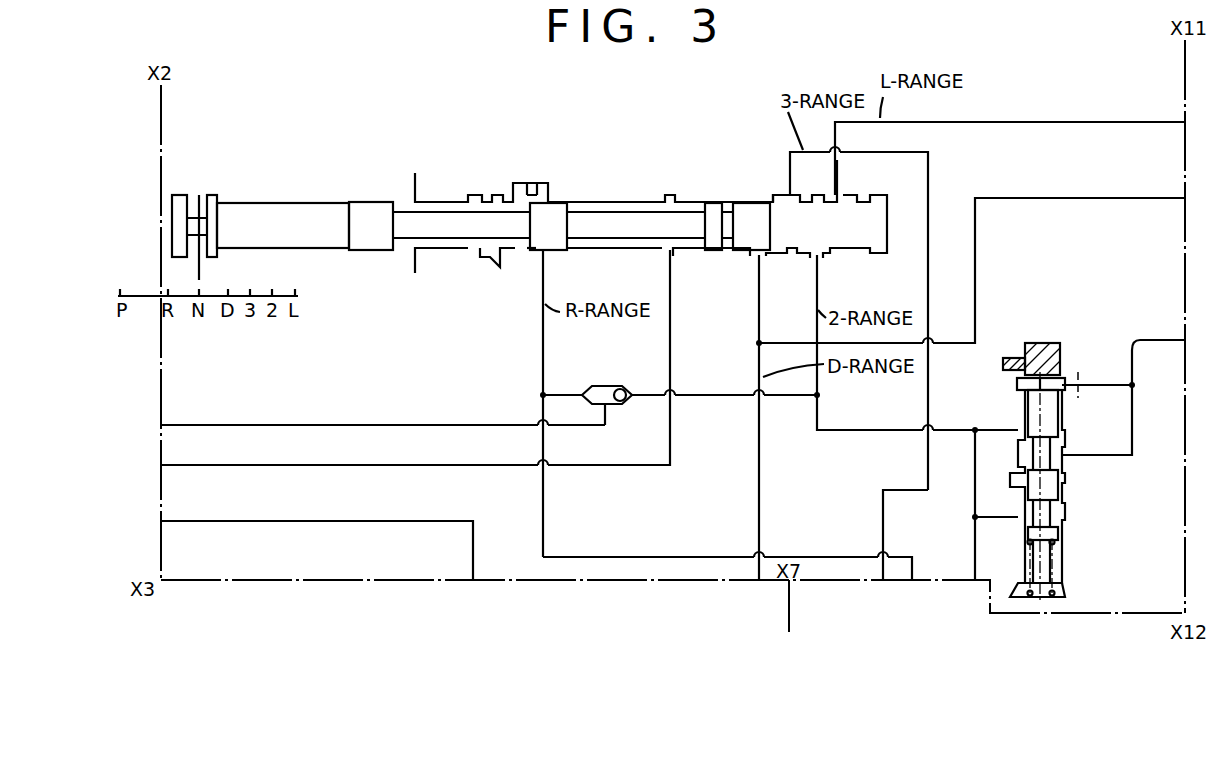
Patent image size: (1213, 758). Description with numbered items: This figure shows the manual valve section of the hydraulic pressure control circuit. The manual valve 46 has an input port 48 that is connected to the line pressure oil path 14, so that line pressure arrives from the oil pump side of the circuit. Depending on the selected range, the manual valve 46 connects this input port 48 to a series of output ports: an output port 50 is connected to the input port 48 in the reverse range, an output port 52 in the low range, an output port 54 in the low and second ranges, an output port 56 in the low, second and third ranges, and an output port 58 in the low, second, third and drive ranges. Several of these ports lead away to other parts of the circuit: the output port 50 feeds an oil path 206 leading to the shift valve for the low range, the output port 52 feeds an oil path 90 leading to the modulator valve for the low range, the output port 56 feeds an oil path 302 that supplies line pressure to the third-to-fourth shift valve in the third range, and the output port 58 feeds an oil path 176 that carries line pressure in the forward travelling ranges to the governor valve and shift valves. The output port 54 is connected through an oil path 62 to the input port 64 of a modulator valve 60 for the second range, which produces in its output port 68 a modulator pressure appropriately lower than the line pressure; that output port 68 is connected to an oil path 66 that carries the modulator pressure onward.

The line pressure oil path 14 is at (673, 363).
The manual valve 46 is at (622, 203).
The input port 48 is at (672, 258).
The output port 50 is at (541, 257).
The output port 52 is at (830, 194).
The output port 54 is at (821, 260).
The output port 56 is at (786, 194).
The output port 58 is at (757, 262).
The modulator valve for the 2-range 60 is at (1046, 340).
The oil path 62 is at (877, 429).
The input port 64 is at (1018, 435).
The oil path 66 is at (1138, 342).
The output port 68 is at (1066, 459).
The oil path 90 is at (1110, 121).
The oil path 176 is at (760, 580).
The oil path 206 is at (628, 559).
The oil path 302 is at (885, 573).